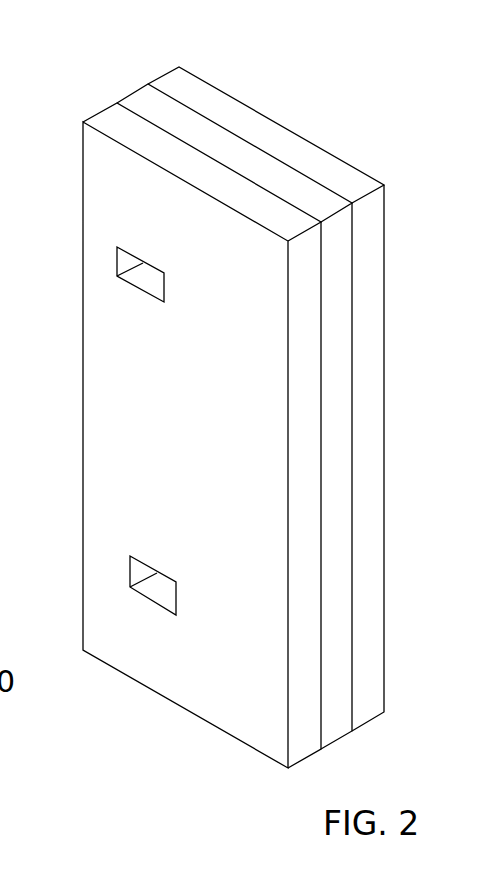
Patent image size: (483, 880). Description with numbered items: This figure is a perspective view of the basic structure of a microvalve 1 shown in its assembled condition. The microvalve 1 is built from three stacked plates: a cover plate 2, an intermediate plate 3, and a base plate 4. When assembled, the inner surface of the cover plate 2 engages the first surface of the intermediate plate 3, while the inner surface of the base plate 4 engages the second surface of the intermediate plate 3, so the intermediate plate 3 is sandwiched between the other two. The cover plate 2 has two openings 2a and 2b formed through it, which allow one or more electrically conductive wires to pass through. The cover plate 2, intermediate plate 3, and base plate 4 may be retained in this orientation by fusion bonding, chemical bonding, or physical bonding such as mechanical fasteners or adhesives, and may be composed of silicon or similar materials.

The microvalve 1 is at (339, 97).
The cover plate 2 is at (106, 118).
The opening 2a is at (143, 280).
The opening 2b is at (154, 595).
The intermediate plate 3 is at (138, 102).
The base plate 4 is at (170, 82).